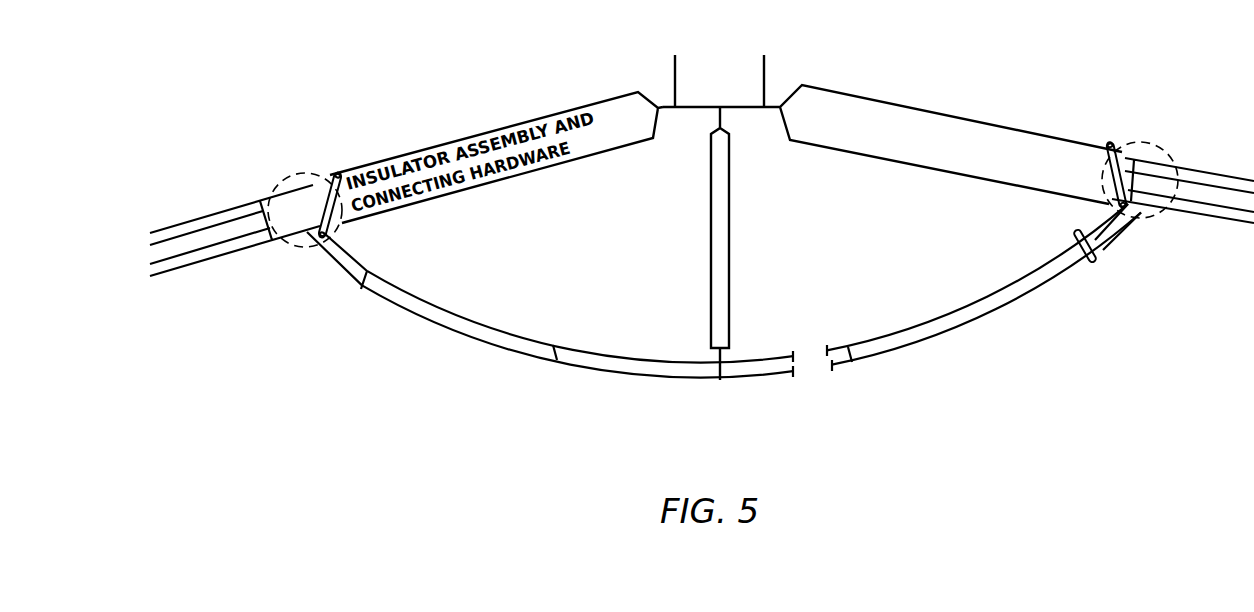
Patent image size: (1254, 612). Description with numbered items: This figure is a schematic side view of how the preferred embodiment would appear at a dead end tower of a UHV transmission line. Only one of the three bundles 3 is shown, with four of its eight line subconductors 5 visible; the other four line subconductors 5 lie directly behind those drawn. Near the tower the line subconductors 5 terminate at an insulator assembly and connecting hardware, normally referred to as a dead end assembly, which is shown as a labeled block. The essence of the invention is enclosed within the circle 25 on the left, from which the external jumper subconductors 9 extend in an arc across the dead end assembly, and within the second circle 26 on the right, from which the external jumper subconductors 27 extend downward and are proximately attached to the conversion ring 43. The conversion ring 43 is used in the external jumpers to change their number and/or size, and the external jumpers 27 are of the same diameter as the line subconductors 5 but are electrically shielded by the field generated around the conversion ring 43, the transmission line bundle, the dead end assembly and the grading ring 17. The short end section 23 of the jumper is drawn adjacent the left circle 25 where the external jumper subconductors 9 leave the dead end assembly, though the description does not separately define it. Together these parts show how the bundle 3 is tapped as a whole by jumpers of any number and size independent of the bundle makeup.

The bundle 3 is at (175, 217).
The line subconductor 5 is at (262, 208).
The external jumper subconductor 9 is at (610, 353).
The grading ring 17 is at (321, 174).
The strap end segment 23 is at (367, 290).
The circle 25 is at (305, 174).
The second circle 26 is at (1140, 143).
The external jumper subconductor 27 is at (1122, 218).
The conversion ring 43 is at (1094, 261).